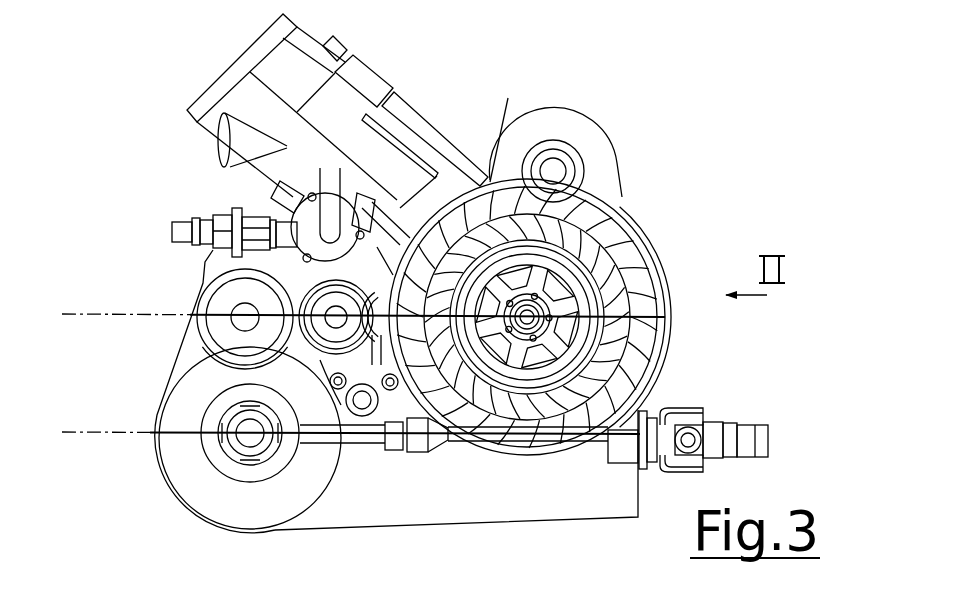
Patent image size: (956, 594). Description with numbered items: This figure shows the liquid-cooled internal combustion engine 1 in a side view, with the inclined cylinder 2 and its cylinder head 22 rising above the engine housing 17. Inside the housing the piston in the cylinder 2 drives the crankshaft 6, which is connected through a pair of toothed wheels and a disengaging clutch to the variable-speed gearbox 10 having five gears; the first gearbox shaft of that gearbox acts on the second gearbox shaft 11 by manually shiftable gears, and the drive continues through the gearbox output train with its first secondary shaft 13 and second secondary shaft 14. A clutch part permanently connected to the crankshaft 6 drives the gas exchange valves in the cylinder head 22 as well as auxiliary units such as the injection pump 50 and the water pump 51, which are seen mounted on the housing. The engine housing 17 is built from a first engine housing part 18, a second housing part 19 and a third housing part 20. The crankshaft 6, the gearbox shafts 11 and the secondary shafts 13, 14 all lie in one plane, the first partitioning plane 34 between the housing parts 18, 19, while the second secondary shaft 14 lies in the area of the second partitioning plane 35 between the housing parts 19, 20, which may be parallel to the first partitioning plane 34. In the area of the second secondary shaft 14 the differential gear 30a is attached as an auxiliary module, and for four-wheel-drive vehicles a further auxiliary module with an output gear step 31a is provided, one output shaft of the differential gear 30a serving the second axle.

The internal combustion engine 1 is at (468, 149).
The cylinder 2 is at (432, 111).
The crankshaft 6 is at (537, 297).
The variable-speed gearbox 10 is at (373, 417).
The second gearbox shaft 11 is at (300, 306).
The first secondary shaft 13 is at (240, 322).
The second secondary shaft 14 is at (247, 435).
The engine housing 17 is at (449, 133).
The first engine housing part 18 is at (633, 220).
The second housing part 19 is at (158, 392).
The third housing part 20 is at (448, 527).
The cylinder head 22 is at (386, 60).
The differential gear 30a is at (287, 497).
The output gear step 31a is at (762, 441).
The first partitioning plane 34 is at (94, 312).
The second partitioning plane 35 is at (84, 432).
The injection pump 50 is at (221, 230).
The water pump 51 is at (313, 222).